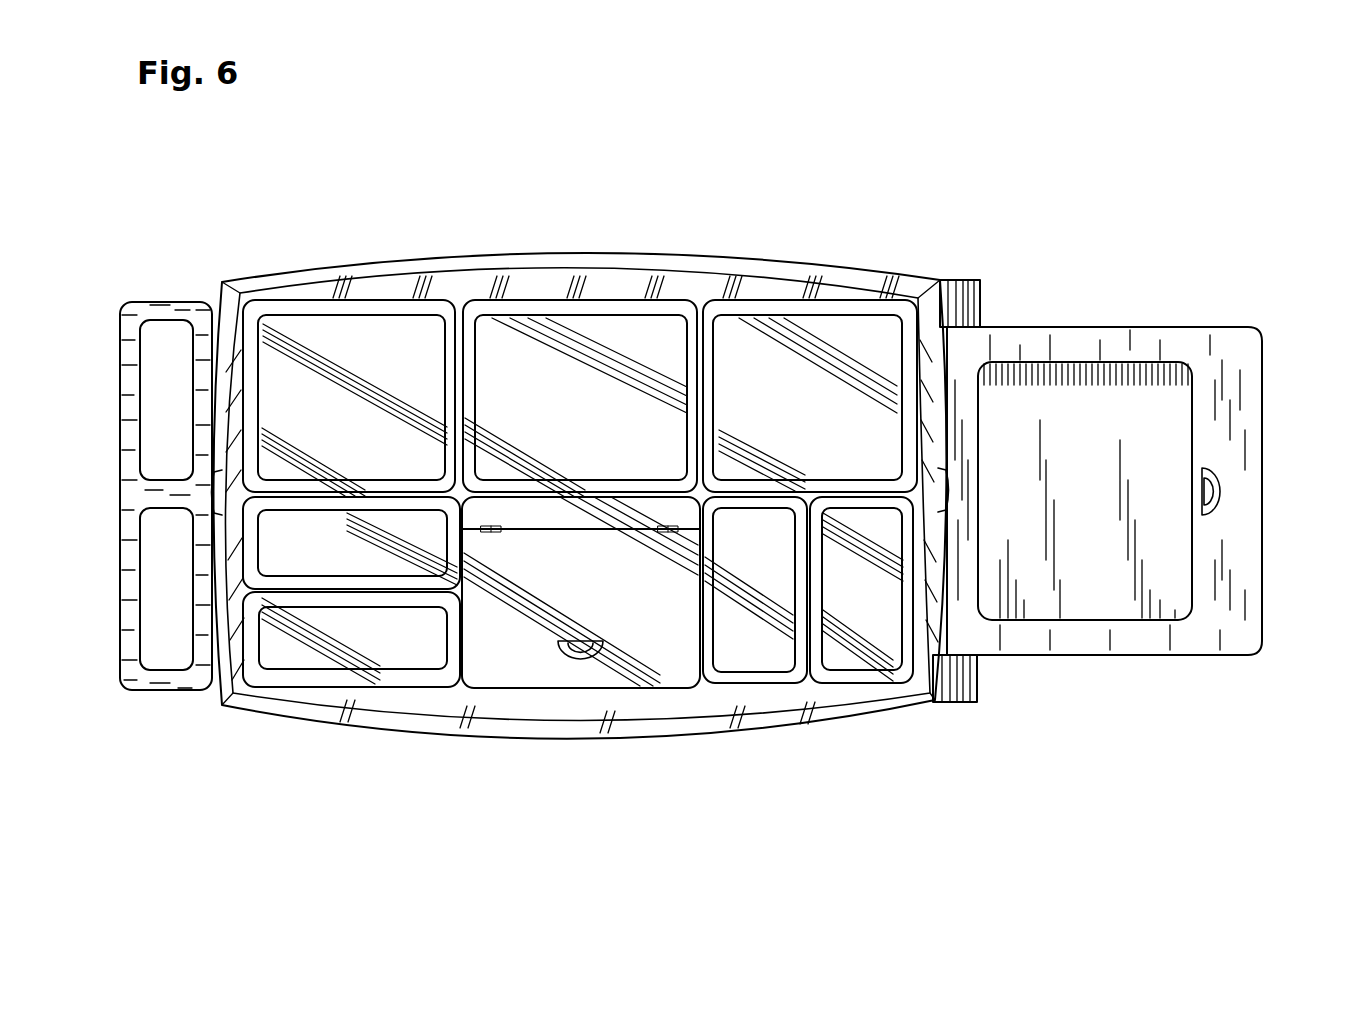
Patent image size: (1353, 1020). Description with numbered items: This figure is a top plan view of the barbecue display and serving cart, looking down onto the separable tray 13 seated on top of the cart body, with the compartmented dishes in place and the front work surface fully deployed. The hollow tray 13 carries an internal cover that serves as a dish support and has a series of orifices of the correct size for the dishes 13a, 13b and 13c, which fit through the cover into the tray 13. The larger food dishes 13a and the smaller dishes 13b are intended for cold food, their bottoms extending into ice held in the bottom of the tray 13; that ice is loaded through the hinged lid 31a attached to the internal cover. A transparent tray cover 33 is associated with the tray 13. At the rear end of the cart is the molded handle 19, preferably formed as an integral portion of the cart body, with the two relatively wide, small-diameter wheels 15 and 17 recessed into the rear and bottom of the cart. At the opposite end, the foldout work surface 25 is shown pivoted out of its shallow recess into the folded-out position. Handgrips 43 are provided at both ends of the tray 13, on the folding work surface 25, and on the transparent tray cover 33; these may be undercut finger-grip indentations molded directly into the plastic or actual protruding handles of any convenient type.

The tray 13 is at (627, 248).
The larger food dish 13a is at (376, 340).
The smaller dish 13b is at (335, 645).
The dish 13c is at (832, 608).
The wheel 15 is at (965, 703).
The wheel 17 is at (963, 283).
The handle 19 is at (160, 300).
The foldout work surface 25 is at (1100, 340).
The hinged lid 31a is at (641, 640).
The transparent tray cover 33 is at (695, 287).
The handgrips 43 is at (212, 495).